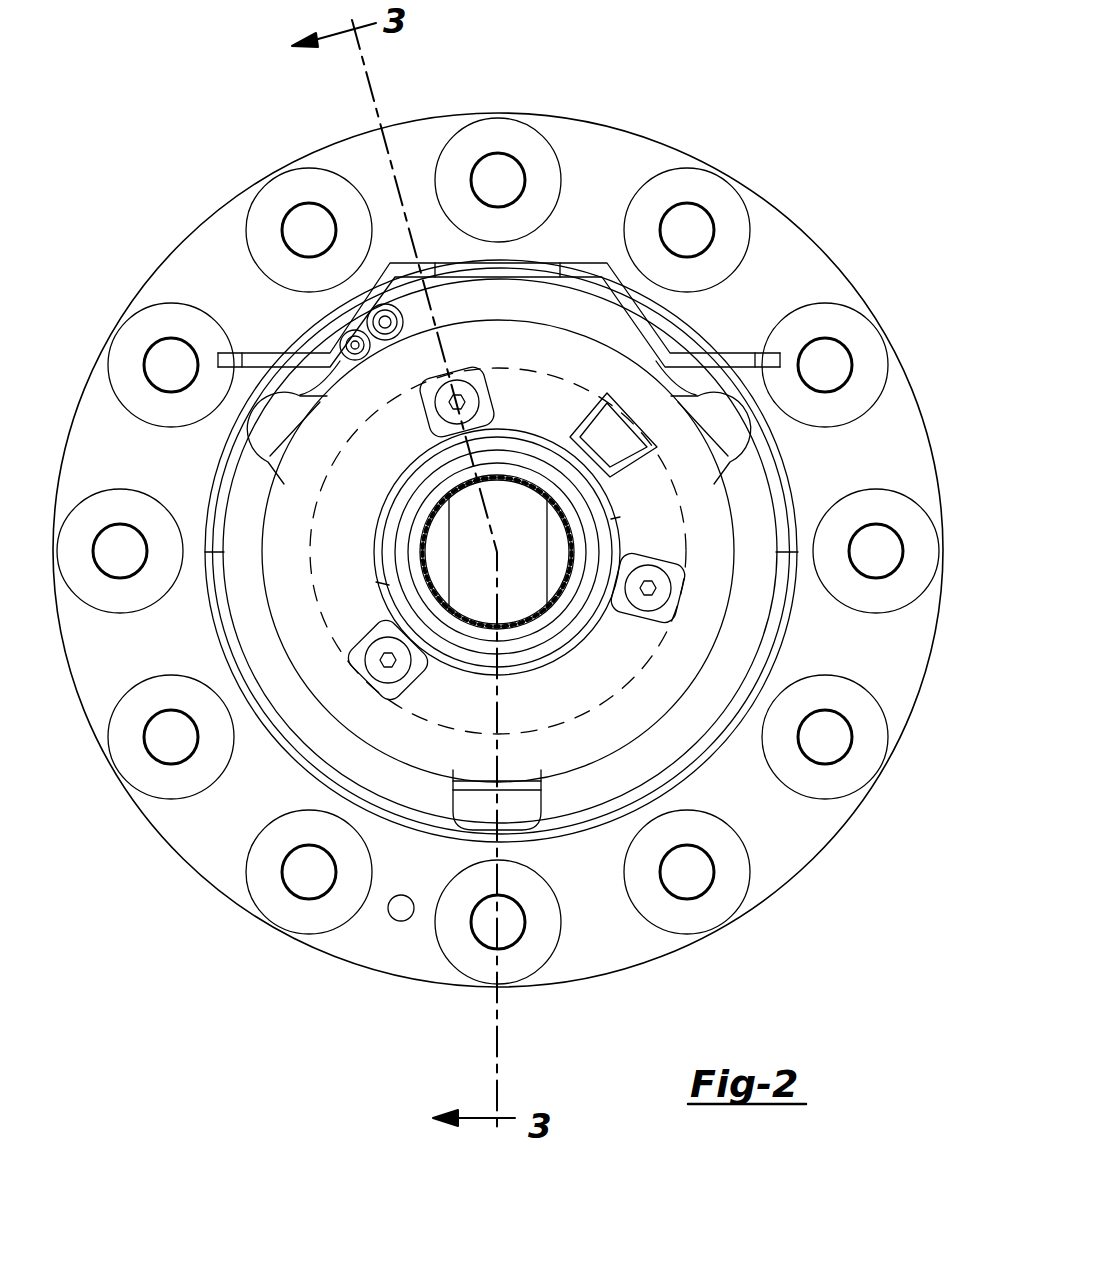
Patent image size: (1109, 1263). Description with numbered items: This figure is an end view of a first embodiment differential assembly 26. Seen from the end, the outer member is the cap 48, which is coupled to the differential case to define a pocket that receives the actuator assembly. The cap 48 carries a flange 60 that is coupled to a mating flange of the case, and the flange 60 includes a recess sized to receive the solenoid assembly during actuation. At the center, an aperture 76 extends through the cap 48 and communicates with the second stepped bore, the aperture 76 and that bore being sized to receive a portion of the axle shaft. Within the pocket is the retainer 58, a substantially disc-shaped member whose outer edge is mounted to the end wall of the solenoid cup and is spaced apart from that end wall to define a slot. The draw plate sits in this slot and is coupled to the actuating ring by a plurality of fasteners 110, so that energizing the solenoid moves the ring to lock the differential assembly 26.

The differential assembly 26 is at (822, 106).
The cap 48 is at (212, 212).
The flange 60 is at (593, 147).
The retainer 58 is at (667, 618).
The aperture 76 is at (520, 612).
The fasteners 110 is at (663, 588).